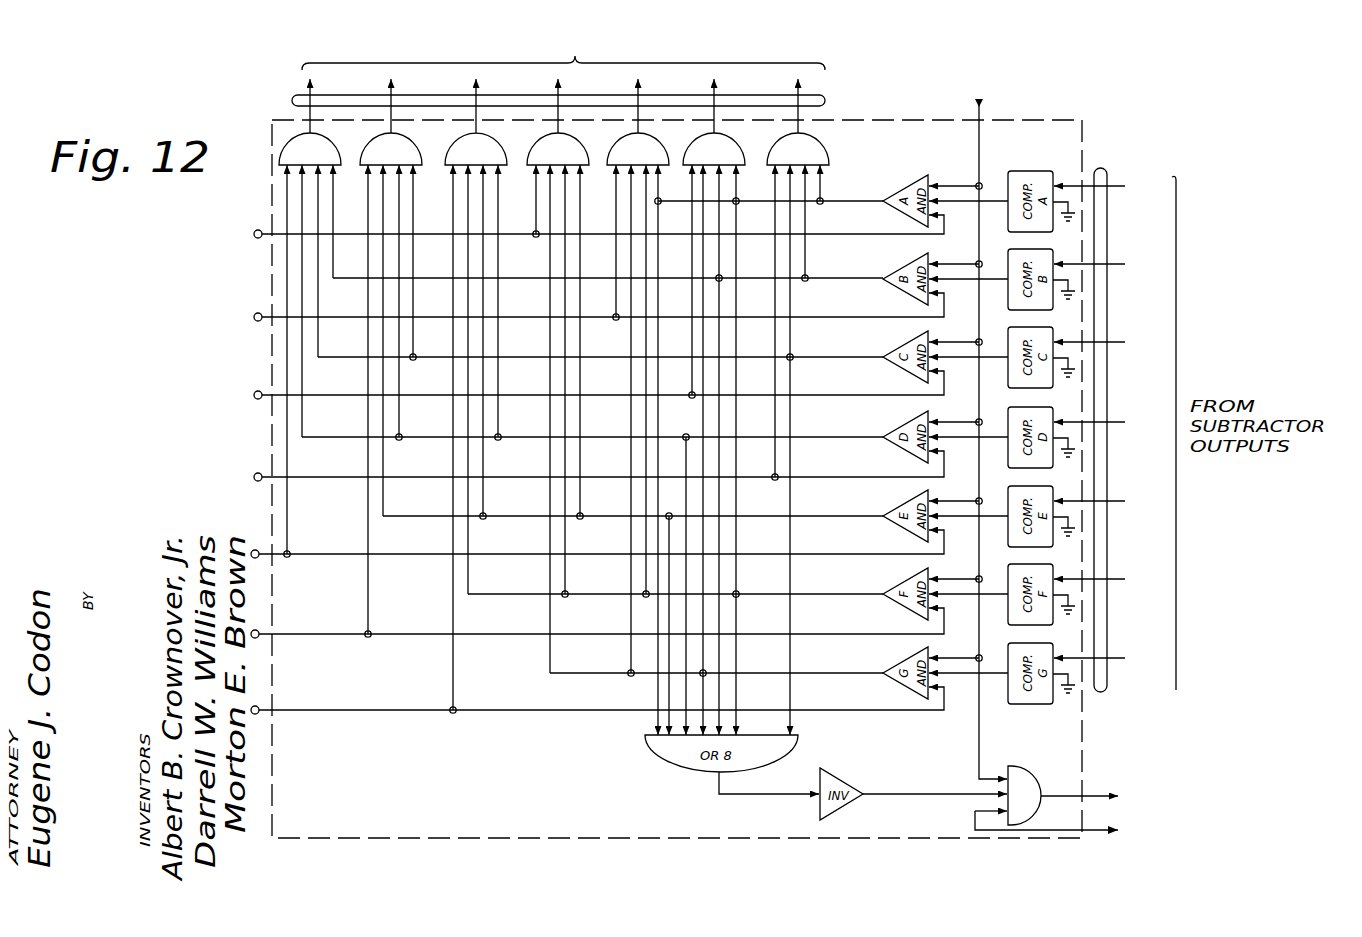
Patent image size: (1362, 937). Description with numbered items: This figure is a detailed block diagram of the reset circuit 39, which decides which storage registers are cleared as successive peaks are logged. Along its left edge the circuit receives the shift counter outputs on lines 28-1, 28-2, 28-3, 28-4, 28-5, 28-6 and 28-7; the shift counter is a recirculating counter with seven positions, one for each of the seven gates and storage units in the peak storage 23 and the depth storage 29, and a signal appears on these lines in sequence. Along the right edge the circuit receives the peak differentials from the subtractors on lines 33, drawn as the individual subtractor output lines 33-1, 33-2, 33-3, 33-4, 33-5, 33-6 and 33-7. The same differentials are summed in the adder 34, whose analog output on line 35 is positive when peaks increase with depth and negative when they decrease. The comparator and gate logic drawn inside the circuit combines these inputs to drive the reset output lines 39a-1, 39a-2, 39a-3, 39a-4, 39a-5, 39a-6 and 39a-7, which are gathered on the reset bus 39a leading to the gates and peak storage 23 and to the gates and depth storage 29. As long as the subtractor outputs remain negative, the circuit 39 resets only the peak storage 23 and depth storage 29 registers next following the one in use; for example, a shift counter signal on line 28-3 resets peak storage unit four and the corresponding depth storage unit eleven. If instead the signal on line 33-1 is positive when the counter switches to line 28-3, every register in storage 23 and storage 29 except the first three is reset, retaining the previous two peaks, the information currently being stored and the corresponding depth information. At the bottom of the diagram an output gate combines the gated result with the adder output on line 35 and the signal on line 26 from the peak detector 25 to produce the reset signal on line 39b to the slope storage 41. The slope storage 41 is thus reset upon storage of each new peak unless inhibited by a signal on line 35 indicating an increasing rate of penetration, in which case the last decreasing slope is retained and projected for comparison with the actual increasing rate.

The reset circuit 39 is at (863, 121).
The reset bus to gates and storage 39a is at (810, 103).
The OR gate 1 output lead 39a-1 is at (306, 91).
The OR gate 2 output lead 39a-2 is at (386, 84).
The OR gate 3 output lead 39a-3 is at (470, 84).
The OR gate 4 output lead 39a-4 is at (552, 84).
The OR gate 5 output lead 39a-5 is at (632, 84).
The OR gate 6 output lead 39a-6 is at (708, 84).
The OR gate 7 output lead 39a-7 is at (792, 84).
The reset signal line 39b is at (1164, 781).
The adder output line 35 is at (982, 113).
The adder 34 is at (992, 86).
The subtractor output lines 33 is at (1108, 172).
The first subtractor output line 33-1 is at (1108, 186).
The subtractor output line 33-2 is at (1108, 264).
The subtractor output line 33-3 is at (1108, 342).
The subtractor output line 33-4 is at (1108, 422).
The subtractor output line 33-5 is at (1108, 501).
The subtractor output line 33-6 is at (1108, 579).
The subtractor output line 33-7 is at (1108, 658).
The shift counter output line 28-1 is at (255, 638).
The shift counter output line 28-2 is at (255, 714).
The shift counter output line 28-3 is at (253, 234).
The shift counter output line 28-4 is at (254, 316).
The shift counter output line 28-5 is at (254, 395).
The shift counter output line 28-6 is at (254, 477).
The shift counter output line 28-7 is at (255, 558).
The peak detector output line 26 is at (1129, 848).
The peak detector 25 is at (1200, 843).
The slope storage unit 41 is at (1181, 801).
The peak storage 23 is at (624, 27).
The depth storage 29 is at (567, 53).